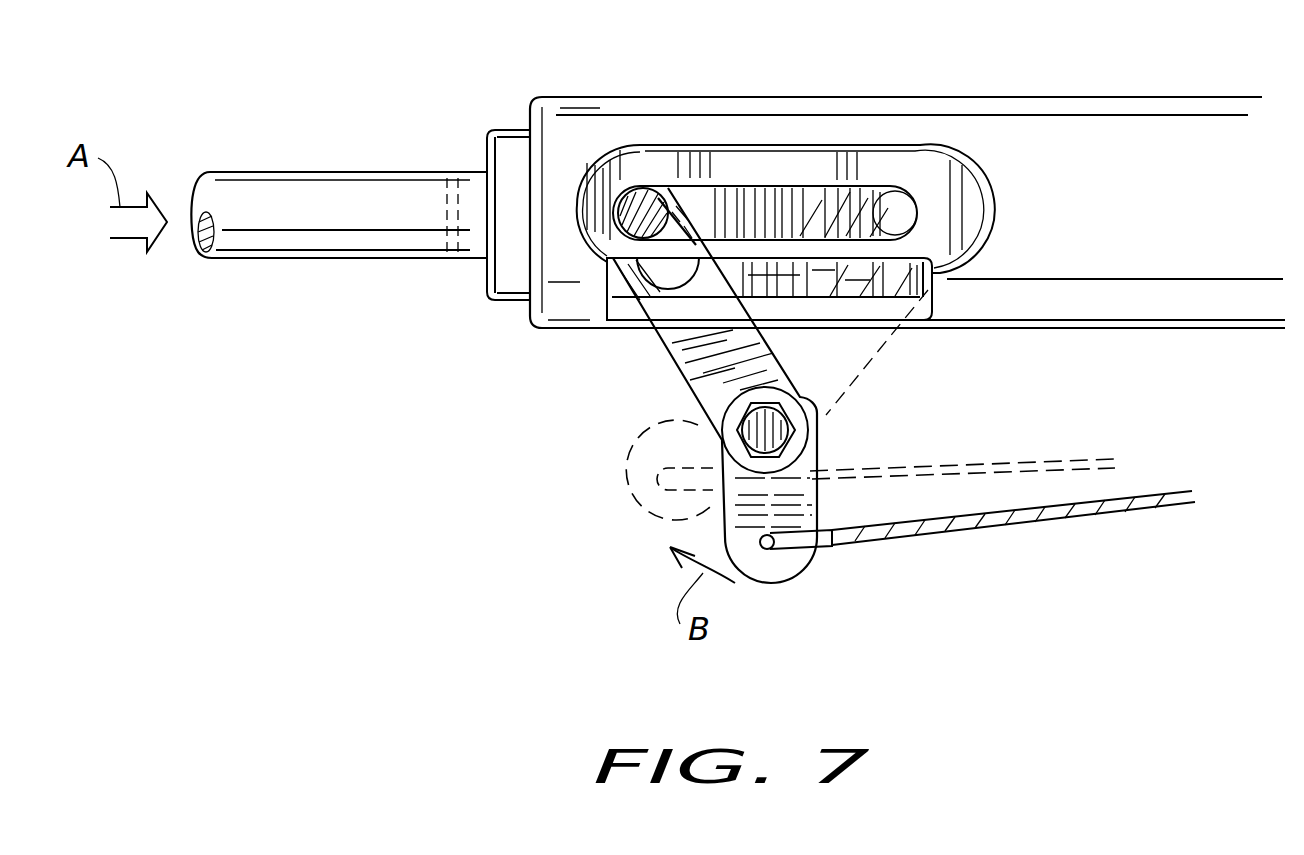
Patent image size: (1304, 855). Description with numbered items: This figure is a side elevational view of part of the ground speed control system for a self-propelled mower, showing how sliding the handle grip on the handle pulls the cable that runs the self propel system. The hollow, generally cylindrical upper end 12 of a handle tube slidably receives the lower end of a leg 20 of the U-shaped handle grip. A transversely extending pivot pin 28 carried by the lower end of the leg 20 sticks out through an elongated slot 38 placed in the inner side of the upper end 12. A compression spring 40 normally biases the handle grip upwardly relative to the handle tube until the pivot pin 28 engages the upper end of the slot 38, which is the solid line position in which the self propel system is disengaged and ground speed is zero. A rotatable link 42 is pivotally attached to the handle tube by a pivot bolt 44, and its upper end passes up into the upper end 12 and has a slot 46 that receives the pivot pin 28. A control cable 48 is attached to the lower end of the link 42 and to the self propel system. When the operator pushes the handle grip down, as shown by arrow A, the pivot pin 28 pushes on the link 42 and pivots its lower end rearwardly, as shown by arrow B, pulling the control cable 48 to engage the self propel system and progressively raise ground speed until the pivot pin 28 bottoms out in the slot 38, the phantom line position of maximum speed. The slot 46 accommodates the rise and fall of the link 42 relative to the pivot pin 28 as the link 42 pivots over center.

The upper end 12 is at (886, 256).
The leg 20 is at (272, 262).
The pivot pin 28 is at (632, 188).
The elongated slot 38 is at (777, 185).
The compression spring 40 is at (803, 208).
The rotatable link 42 is at (702, 367).
The pivot bolt 44 is at (795, 436).
The slot 46 is at (680, 292).
The control cable 48 is at (1035, 518).